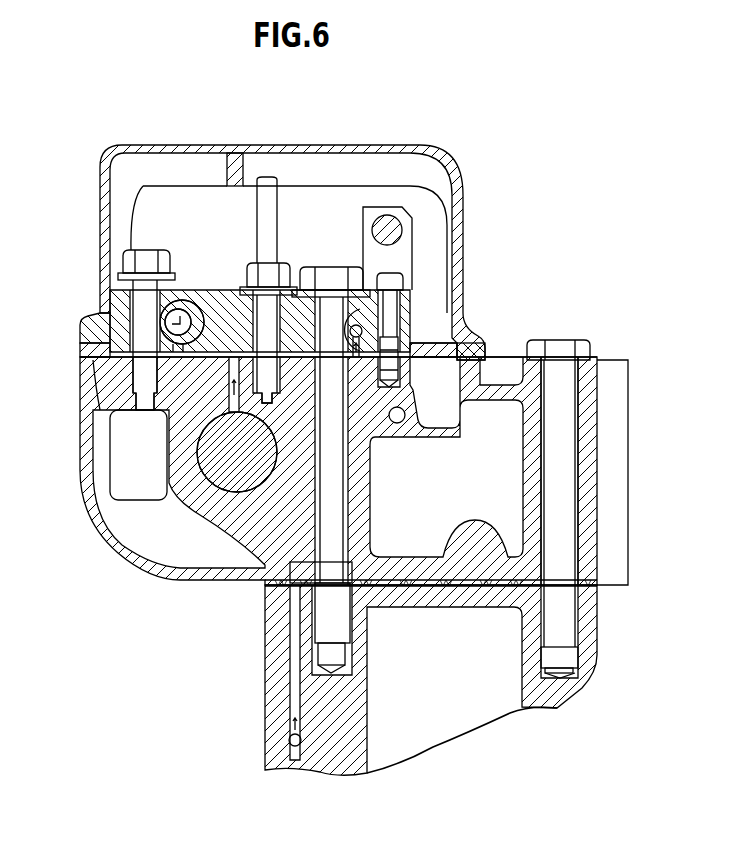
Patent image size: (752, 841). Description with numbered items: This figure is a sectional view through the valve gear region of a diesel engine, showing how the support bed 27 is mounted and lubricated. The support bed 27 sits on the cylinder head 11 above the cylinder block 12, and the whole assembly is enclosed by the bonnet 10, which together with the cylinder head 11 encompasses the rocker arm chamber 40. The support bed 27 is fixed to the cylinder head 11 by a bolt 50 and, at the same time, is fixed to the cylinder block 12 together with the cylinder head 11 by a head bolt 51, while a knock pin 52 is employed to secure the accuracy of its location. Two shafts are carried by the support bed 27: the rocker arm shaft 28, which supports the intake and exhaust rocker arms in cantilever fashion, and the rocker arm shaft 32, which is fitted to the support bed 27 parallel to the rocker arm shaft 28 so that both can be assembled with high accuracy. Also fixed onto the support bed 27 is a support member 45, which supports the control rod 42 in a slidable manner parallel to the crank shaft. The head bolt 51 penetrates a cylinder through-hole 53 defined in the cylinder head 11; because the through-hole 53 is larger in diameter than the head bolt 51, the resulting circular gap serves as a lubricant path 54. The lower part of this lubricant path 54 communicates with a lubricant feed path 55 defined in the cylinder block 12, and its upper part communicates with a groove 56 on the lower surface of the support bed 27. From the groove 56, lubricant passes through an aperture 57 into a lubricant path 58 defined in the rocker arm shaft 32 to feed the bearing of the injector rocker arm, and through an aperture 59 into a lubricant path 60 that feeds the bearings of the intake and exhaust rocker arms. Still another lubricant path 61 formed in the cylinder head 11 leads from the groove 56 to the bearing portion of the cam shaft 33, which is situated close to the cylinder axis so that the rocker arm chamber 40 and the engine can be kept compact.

The bonnet 10 is at (447, 143).
The cylinder head 11 is at (262, 532).
The cylinder block 12 is at (275, 710).
The support bed 27 is at (227, 297).
The rocker arm shaft 28 is at (360, 317).
The rocker arm shaft 32 is at (177, 243).
The cam shaft 33 is at (225, 485).
The rocker arm chamber 40 is at (137, 152).
The control rod 42 is at (400, 217).
The support member 45 is at (360, 190).
The bolt 50 is at (128, 253).
The head bolt 51 is at (330, 273).
The knock pin 52 is at (391, 357).
The cylinder through-hole 53 is at (345, 458).
The lubricant path 54 is at (345, 493).
The lubricant feed path 55 is at (295, 686).
The groove 56 is at (130, 410).
The aperture 57 is at (167, 335).
The lubricant path 58 is at (170, 315).
The aperture 59 is at (385, 345).
The lubricant path 60 is at (367, 327).
The lubricant path 61 is at (230, 402).